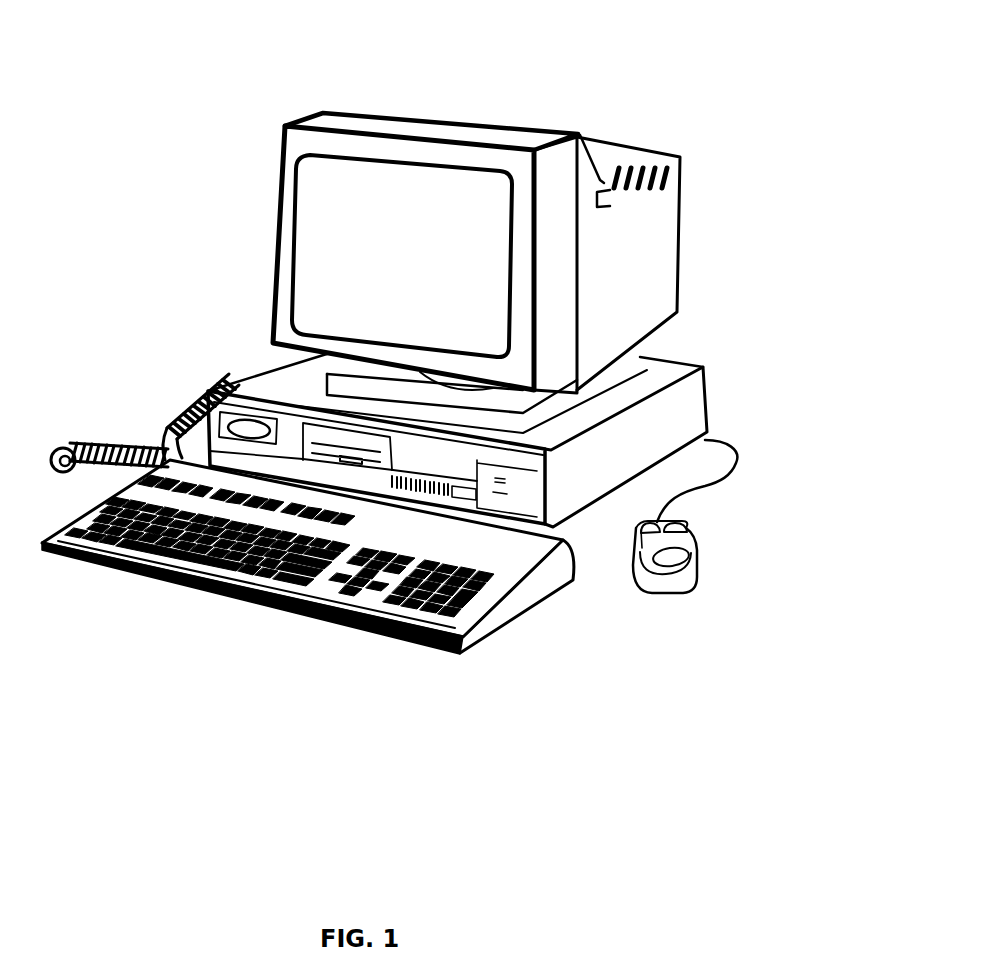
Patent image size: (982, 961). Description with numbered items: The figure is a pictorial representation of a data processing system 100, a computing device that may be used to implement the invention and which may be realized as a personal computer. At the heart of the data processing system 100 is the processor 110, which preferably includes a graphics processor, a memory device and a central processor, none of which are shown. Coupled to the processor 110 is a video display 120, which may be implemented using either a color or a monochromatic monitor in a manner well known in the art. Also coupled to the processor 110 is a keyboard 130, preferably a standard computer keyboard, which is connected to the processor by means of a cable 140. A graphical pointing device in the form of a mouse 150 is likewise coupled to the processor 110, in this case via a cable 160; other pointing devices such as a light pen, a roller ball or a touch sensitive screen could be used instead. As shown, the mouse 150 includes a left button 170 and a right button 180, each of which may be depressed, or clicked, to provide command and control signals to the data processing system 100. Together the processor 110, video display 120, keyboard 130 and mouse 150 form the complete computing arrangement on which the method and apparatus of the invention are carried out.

The data processing system 100 is at (569, 100).
The processor 110 is at (693, 395).
The video display 120 is at (270, 297).
The keyboard 130 is at (303, 617).
The cable 140 is at (178, 400).
The mouse 150 is at (680, 587).
The cable 160 is at (710, 483).
The left button 170 is at (633, 551).
The right button 180 is at (693, 535).